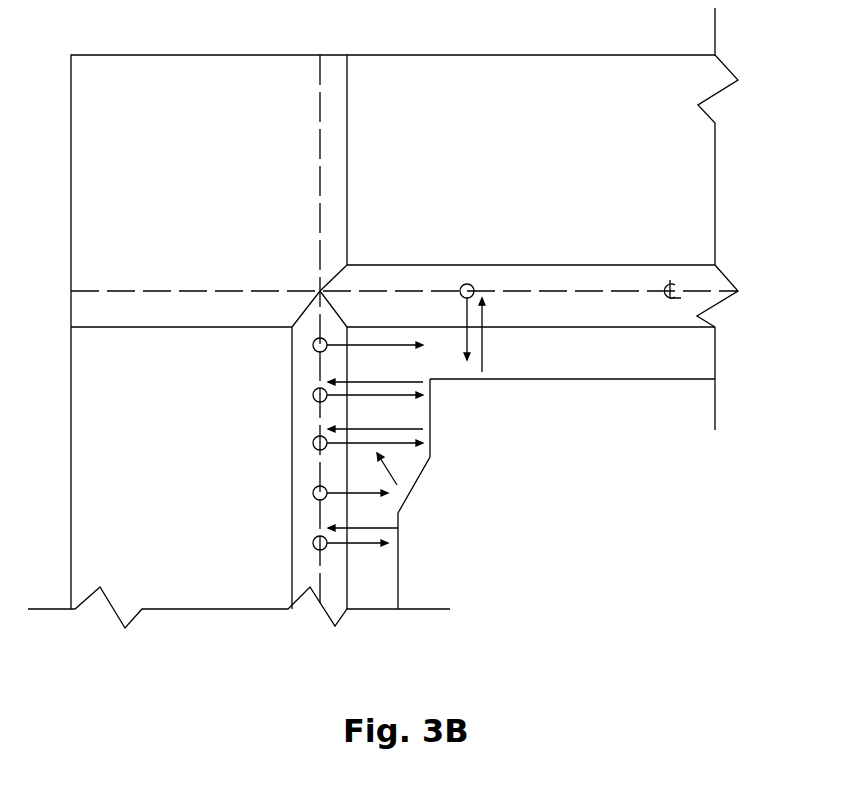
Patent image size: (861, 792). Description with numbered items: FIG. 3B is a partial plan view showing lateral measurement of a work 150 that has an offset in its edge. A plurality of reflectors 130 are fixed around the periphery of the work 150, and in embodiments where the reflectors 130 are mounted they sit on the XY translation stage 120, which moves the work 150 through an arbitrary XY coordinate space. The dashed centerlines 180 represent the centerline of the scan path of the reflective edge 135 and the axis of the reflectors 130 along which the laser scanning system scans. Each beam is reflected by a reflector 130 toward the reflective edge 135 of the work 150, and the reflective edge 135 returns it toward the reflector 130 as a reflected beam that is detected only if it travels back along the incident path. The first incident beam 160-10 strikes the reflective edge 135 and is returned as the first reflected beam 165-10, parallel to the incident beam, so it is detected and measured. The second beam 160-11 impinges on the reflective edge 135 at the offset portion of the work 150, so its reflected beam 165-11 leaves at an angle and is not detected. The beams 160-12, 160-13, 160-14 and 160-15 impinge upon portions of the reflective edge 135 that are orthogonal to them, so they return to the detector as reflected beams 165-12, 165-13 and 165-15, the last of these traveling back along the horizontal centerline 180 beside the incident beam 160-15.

The XY translation stage 120 is at (135, 83).
The reflector 130 is at (611, 274).
The reflective edge 135 is at (649, 376).
The work 150 is at (527, 380).
The centerline 180 is at (320, 188).
The incident beam 160-10 is at (314, 544).
The second beam 160-11 is at (314, 492).
The beam 160-12 is at (331, 444).
The beam 160-13 is at (331, 394).
The beam 160-14 is at (331, 344).
The beam 160-15 is at (459, 315).
The first reflected beam 165-10 is at (319, 526).
The reflected beam 165-11 is at (361, 469).
The reflected beam 165-12 is at (331, 427).
The reflected beam 165-13 is at (331, 376).
The reflected beam 165-15 is at (510, 335).